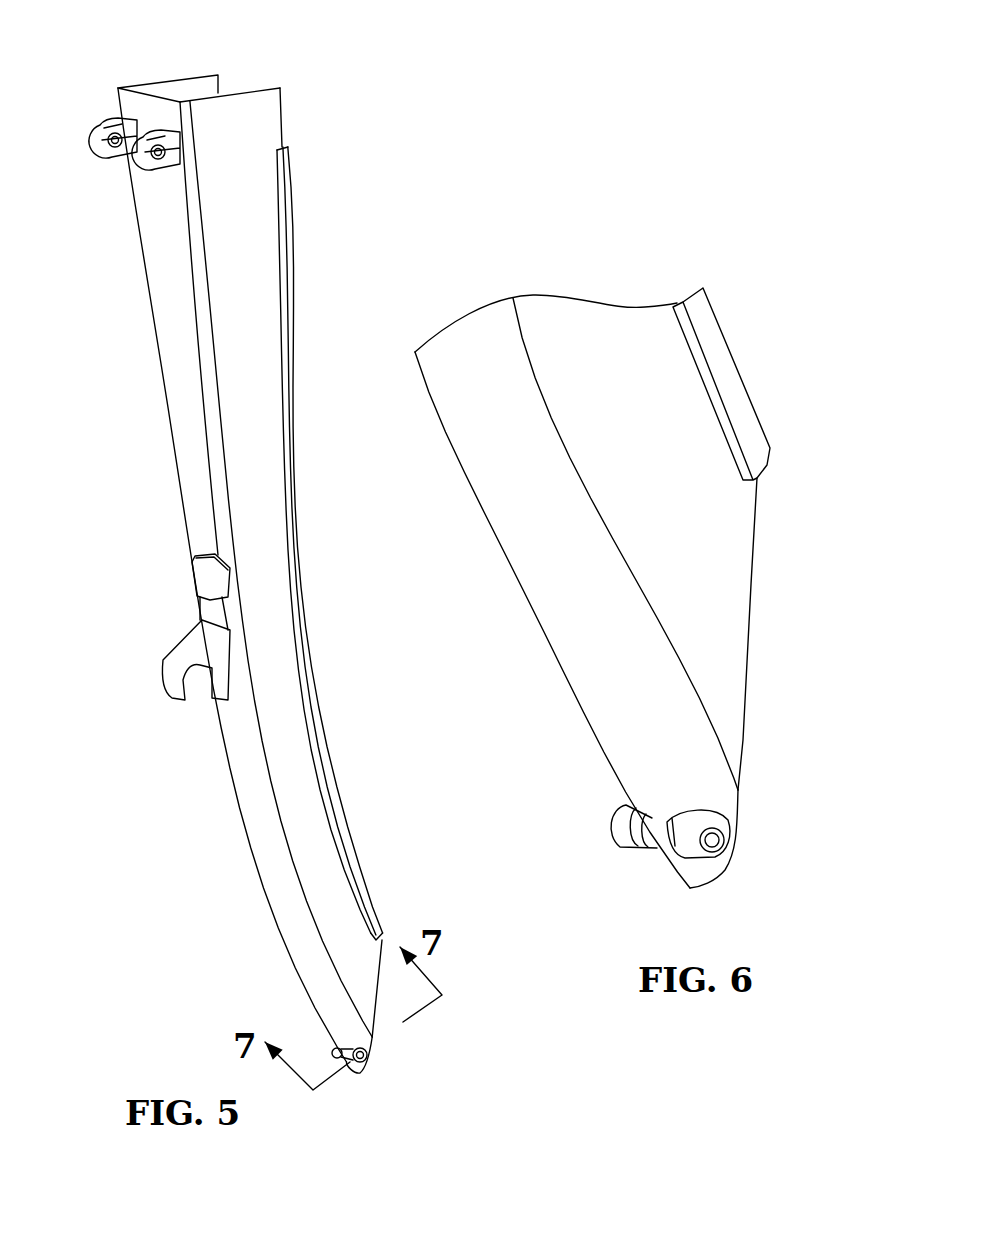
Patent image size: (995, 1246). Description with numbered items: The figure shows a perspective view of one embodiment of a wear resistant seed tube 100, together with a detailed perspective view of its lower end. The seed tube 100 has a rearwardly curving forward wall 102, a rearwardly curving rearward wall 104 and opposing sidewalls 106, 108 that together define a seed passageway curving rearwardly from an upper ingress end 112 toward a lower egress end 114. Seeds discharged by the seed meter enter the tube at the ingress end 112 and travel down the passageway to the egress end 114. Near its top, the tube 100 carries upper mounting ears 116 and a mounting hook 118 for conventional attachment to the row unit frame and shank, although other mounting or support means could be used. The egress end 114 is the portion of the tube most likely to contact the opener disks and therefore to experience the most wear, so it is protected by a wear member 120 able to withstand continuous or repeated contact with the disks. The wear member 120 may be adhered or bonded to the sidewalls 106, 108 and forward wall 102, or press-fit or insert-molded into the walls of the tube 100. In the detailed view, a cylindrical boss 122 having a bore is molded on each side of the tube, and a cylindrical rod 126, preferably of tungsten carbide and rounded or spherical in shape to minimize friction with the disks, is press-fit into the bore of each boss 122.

In FIG. 5, the wear resistant seed tube 100 is at (483, 277).
In FIG. 5, the forward wall 102 is at (252, 832).
In FIG. 6, the forward wall 102 is at (510, 565).
In FIG. 5, the rearward wall 104 is at (350, 837).
In FIG. 6, the rearward wall 104 is at (718, 343).
In FIG. 5, the sidewall 106 is at (258, 128).
In FIG. 6, the sidewall 106 is at (695, 600).
In FIG. 5, the sidewall 108 is at (170, 86).
In FIG. 5, the ingress end 112 is at (240, 87).
In FIG. 5, the egress end 114 is at (373, 1037).
In FIG. 6, the egress end 114 is at (738, 790).
In FIG. 5, the upper mounting ears 116 is at (150, 163).
In FIG. 5, the mounting hook 118 is at (183, 647).
In FIG. 5, the wear member 120 is at (317, 1048).
In FIG. 6, the wear member 120 is at (642, 860).
In FIG. 6, the cylindrical boss 122 is at (615, 822).
In FIG. 6, the cylindrical rod 126 is at (720, 857).